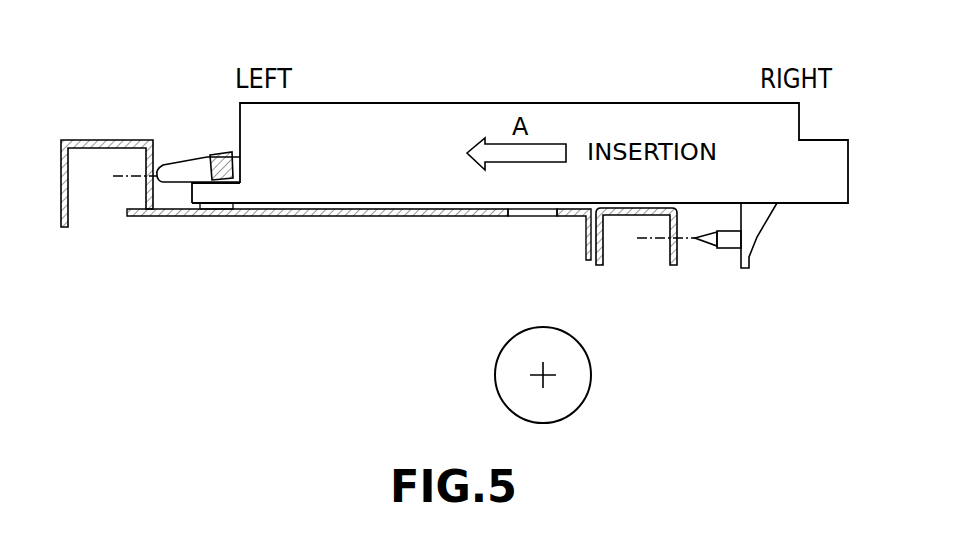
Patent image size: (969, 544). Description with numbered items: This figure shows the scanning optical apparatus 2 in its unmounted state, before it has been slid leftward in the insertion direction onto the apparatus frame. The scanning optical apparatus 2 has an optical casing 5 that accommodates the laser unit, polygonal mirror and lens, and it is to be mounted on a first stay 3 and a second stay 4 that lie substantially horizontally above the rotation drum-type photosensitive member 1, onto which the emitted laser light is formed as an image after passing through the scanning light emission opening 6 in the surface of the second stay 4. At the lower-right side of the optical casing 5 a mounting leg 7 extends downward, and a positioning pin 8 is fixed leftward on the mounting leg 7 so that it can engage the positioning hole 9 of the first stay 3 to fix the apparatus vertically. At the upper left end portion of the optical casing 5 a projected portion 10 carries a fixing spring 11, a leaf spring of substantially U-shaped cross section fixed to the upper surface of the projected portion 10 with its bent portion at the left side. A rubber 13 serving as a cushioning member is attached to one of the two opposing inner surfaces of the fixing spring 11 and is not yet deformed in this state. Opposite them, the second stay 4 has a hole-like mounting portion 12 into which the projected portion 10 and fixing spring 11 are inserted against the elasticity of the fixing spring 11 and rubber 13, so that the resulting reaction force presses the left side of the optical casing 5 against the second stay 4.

The photosensitive member 1 is at (593, 373).
The scanning optical apparatus 2 is at (611, 92).
The first stay 3 is at (617, 217).
The second stay 4 is at (357, 218).
The optical casing 5 is at (495, 118).
The scanning light emission opening 6 is at (528, 218).
The mounting leg 7 is at (758, 217).
The positioning pin 8 is at (725, 248).
The positioning hole 9 is at (679, 255).
The projected portion 10 is at (217, 193).
The fixing spring 11 is at (187, 158).
The hole-like mounting portion 12 is at (148, 187).
The rubber 13 is at (222, 153).